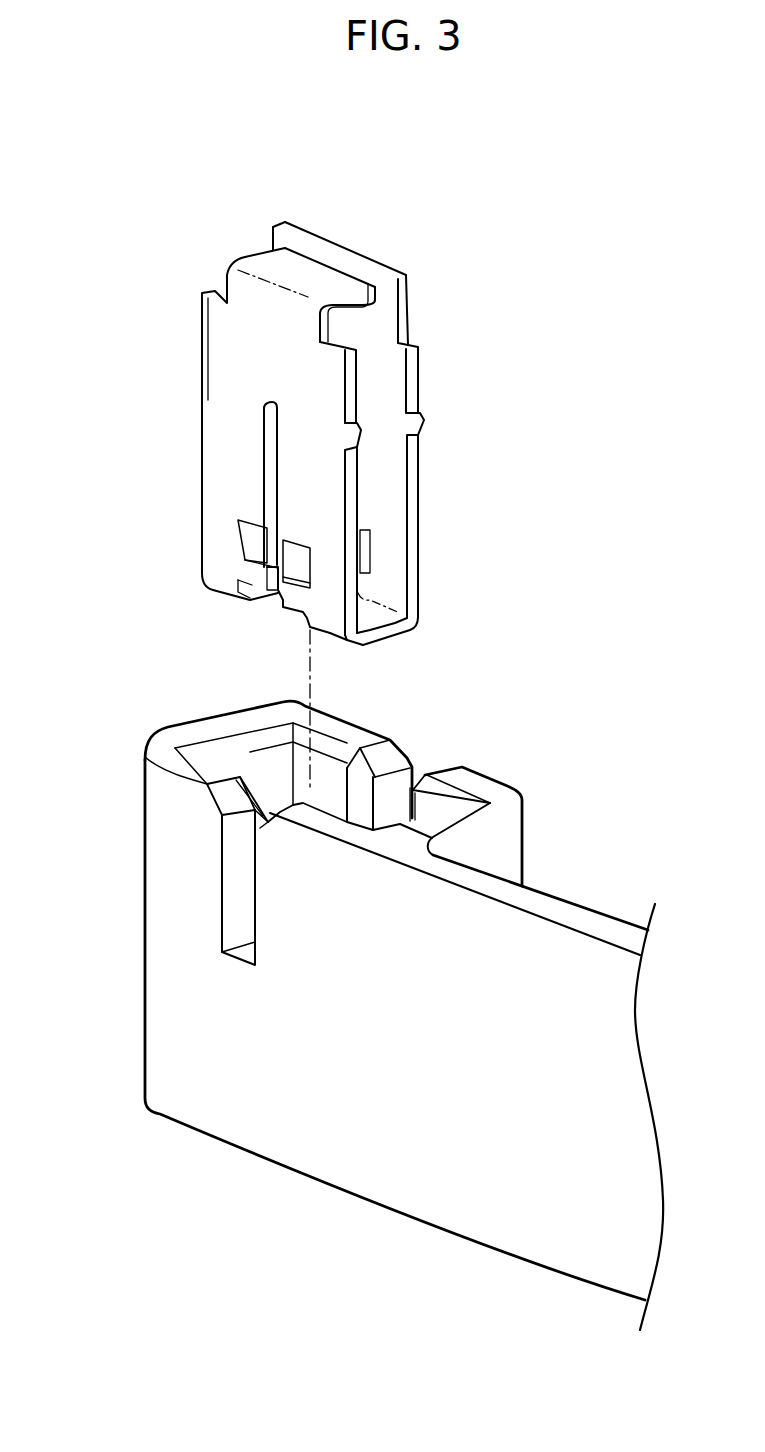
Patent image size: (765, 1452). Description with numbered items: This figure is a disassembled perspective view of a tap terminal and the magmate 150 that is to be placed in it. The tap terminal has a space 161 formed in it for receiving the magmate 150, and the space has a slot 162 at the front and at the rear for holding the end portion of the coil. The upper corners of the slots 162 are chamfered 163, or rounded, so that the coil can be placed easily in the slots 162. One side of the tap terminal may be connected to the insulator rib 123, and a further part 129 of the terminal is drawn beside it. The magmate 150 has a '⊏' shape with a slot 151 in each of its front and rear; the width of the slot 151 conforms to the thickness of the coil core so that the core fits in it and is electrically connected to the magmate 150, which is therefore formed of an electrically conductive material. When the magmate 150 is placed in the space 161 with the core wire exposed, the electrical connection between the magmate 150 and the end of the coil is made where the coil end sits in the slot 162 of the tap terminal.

The magmate 150 is at (357, 247).
The slot 151 is at (272, 468).
The space 161 is at (256, 765).
The slot 162 is at (240, 903).
The chamfer 163 is at (228, 798).
The guide rib 129 is at (493, 780).
The insulator rib 123 is at (586, 921).